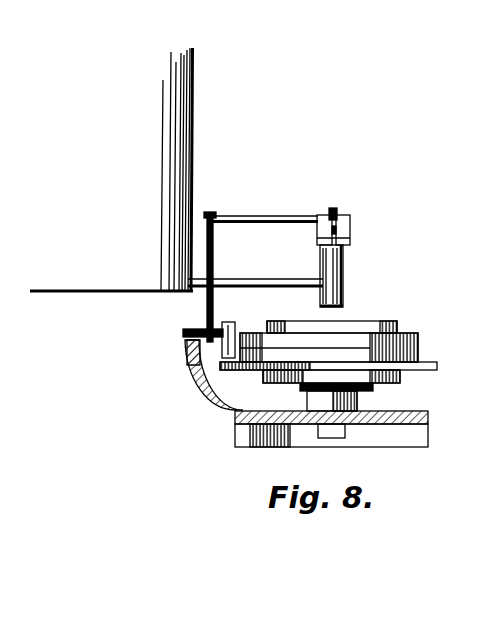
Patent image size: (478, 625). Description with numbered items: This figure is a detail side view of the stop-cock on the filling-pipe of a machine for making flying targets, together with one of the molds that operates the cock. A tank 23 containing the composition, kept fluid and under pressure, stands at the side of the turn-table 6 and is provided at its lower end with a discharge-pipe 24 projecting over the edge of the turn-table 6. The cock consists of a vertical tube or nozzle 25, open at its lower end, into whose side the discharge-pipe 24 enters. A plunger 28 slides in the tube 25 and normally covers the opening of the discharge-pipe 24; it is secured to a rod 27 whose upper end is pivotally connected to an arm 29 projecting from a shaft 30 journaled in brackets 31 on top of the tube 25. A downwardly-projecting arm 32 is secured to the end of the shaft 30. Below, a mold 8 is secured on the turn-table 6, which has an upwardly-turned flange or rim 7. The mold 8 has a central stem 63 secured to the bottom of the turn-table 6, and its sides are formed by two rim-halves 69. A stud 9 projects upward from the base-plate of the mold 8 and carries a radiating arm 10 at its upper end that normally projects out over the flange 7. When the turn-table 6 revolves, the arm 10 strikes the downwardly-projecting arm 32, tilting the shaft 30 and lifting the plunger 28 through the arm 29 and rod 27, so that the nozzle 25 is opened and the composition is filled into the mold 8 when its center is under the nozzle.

The tank 23 is at (111, 169).
The shaft 30 is at (263, 210).
The downwardly-projecting arm 32 is at (212, 267).
The discharge-pipe 24 is at (255, 276).
The brackets 31 is at (319, 236).
The arm 29 is at (336, 222).
The vertical tube or nozzle 25 is at (345, 271).
The rod 27 is at (325, 266).
The plunger 28 is at (340, 289).
The radiating arm 10 is at (198, 325).
The stud 9 is at (230, 333).
The flange or rim 7 is at (186, 355).
The turn-table 6 is at (211, 375).
The rim-halves 69 is at (331, 319).
The mold 8 is at (385, 333).
The central stem 63 is at (331, 390).